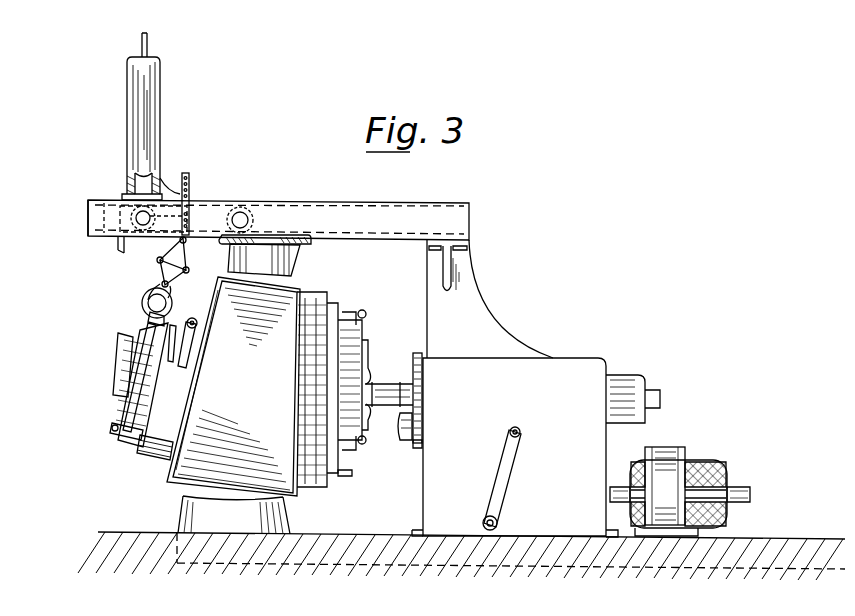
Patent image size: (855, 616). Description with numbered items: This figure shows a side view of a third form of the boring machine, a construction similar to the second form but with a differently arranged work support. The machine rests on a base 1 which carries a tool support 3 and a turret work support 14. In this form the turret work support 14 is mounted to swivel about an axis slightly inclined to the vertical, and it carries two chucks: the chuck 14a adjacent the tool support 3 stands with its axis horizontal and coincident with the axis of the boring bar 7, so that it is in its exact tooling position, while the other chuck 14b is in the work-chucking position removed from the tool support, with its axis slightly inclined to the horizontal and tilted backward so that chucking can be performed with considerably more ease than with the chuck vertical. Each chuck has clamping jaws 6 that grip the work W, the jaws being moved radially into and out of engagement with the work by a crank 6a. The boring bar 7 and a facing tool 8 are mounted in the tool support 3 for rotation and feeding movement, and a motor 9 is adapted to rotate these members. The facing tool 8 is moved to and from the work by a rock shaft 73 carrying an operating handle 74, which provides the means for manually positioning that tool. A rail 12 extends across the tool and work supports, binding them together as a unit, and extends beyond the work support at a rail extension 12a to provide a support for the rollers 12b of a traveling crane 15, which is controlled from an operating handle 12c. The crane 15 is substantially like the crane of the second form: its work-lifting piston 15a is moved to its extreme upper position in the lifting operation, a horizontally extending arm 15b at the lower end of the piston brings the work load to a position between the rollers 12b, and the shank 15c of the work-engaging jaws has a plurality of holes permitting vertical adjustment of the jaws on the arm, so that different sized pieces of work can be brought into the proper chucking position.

The base 1 is at (175, 555).
The tool support 3 is at (580, 375).
The clamping jaws 6 is at (340, 318).
The crank 6a is at (185, 332).
The boring bar 7 is at (402, 385).
The facing tool 8 is at (406, 433).
The motor 9 is at (676, 455).
The rail 12 is at (443, 210).
The rail extension 12a is at (98, 214).
The rollers 12b is at (242, 205).
The operating handle 12c is at (114, 250).
The turret work support 14 is at (232, 416).
The chuck 14a is at (315, 310).
The chuck 14b is at (112, 430).
The crane 15 is at (138, 150).
The work-lifting piston 15a is at (128, 189).
The horizontally extending arm 15b is at (203, 222).
The shank 15c is at (188, 175).
The rock shaft 73 is at (498, 522).
The operating handle 74 is at (512, 465).
The work W is at (352, 474).